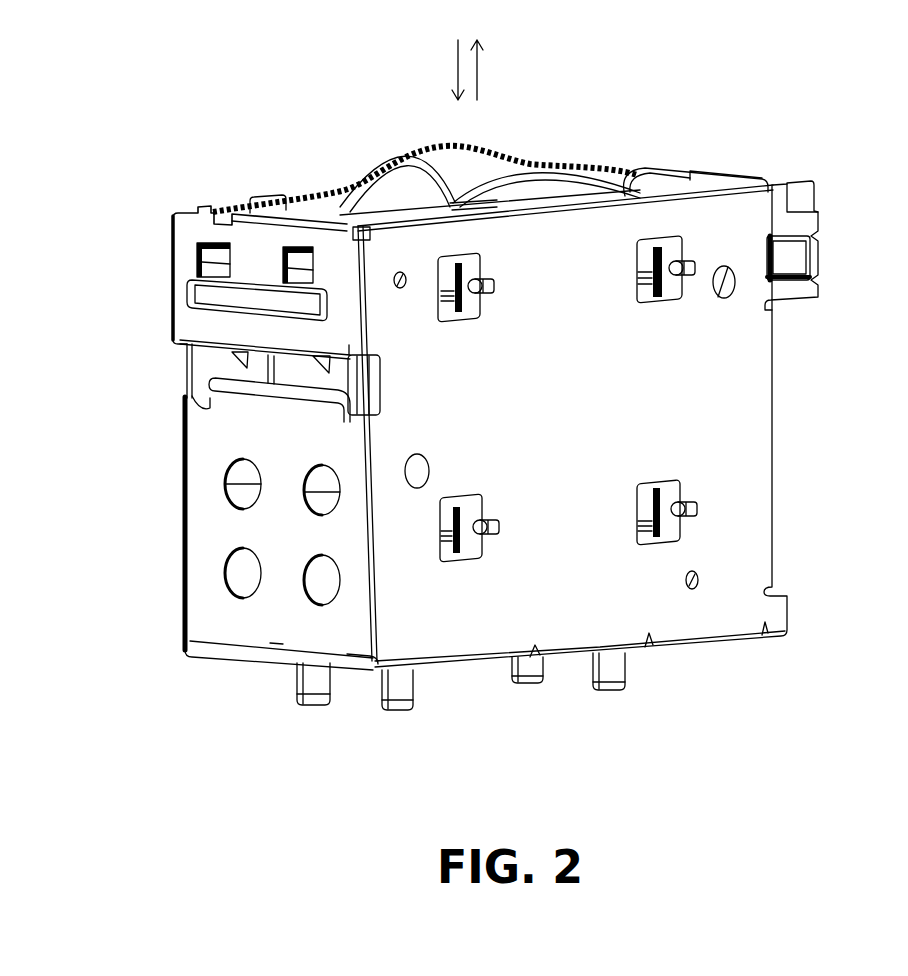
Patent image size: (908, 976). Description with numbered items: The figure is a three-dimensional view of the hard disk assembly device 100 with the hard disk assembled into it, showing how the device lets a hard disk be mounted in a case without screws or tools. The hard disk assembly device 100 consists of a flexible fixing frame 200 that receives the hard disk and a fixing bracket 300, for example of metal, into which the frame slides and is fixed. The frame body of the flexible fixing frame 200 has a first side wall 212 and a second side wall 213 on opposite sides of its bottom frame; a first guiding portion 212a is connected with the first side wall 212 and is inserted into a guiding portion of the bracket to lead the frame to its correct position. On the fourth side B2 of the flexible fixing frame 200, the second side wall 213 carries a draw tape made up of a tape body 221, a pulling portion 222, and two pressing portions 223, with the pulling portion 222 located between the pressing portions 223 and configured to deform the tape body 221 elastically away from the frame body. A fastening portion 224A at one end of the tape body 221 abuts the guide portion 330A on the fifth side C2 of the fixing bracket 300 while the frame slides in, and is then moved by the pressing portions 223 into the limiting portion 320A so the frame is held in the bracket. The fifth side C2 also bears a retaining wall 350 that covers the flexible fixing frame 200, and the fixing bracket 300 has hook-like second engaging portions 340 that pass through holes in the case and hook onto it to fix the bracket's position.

The hard disk assembly device 100 is at (782, 698).
The flexible fixing frame 200 is at (495, 130).
The first side wall 212 is at (340, 673).
The first guiding portion 212a is at (400, 693).
The second side wall 213 is at (300, 373).
The tape body 221 is at (642, 188).
The pulling portion 222 is at (570, 160).
The pressing portions 223 is at (697, 172).
The fastening portion 224A is at (283, 262).
The fixing bracket 300 is at (743, 420).
The limiting portion 320A is at (283, 276).
The guide portion 330A is at (267, 208).
The second engaging portions 340 is at (667, 283).
The retaining wall 350 is at (208, 608).
The fourth side B2 is at (490, 208).
The fifth side C2 is at (188, 514).